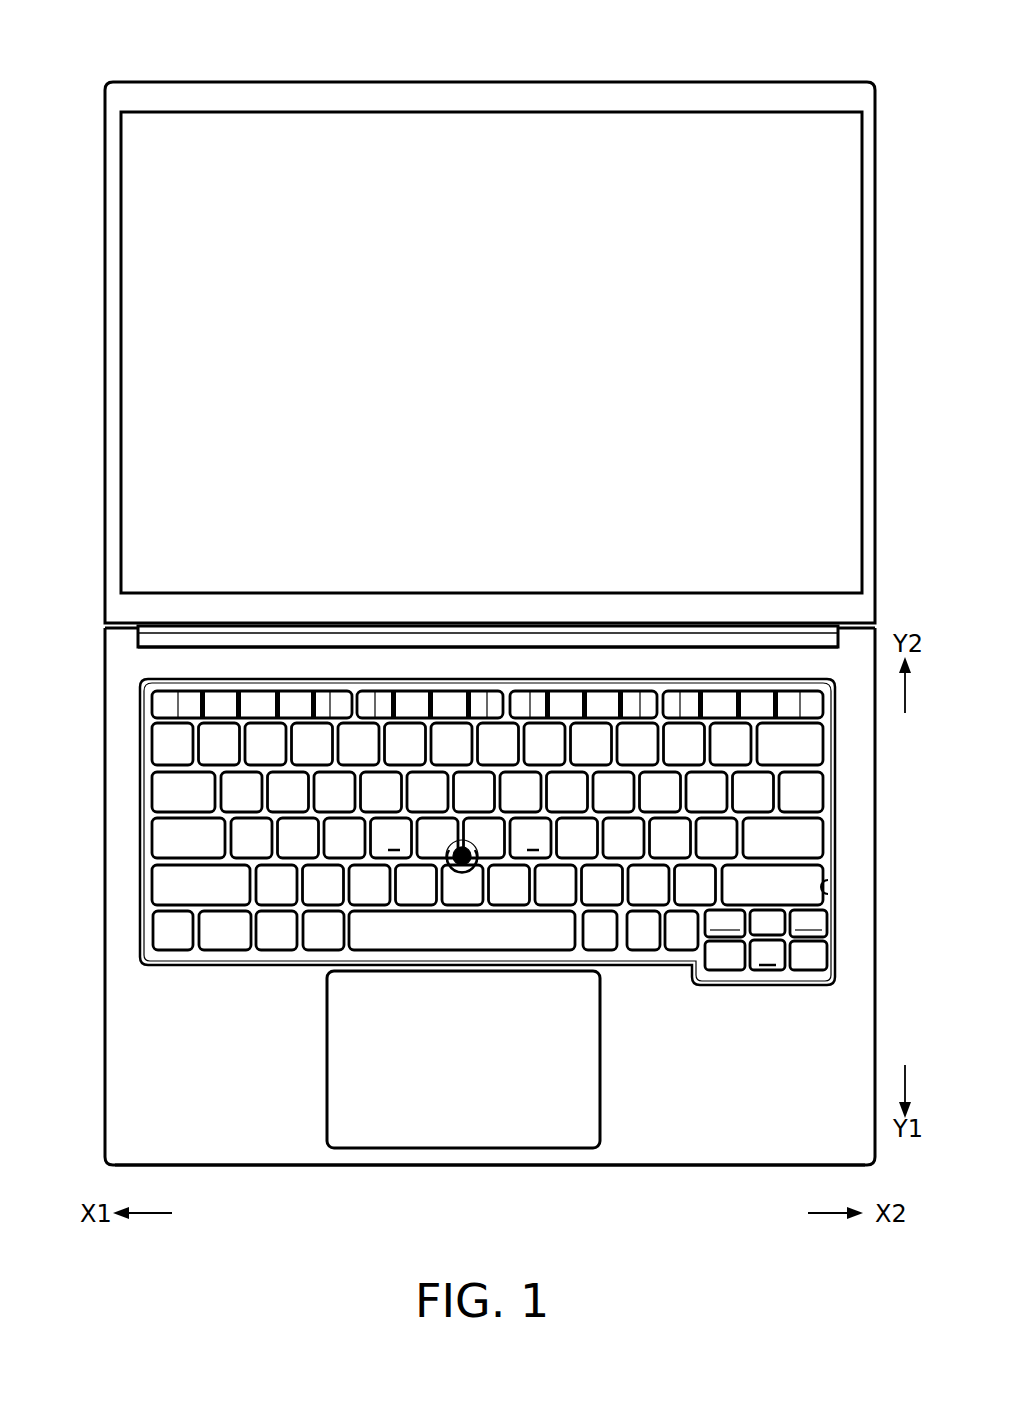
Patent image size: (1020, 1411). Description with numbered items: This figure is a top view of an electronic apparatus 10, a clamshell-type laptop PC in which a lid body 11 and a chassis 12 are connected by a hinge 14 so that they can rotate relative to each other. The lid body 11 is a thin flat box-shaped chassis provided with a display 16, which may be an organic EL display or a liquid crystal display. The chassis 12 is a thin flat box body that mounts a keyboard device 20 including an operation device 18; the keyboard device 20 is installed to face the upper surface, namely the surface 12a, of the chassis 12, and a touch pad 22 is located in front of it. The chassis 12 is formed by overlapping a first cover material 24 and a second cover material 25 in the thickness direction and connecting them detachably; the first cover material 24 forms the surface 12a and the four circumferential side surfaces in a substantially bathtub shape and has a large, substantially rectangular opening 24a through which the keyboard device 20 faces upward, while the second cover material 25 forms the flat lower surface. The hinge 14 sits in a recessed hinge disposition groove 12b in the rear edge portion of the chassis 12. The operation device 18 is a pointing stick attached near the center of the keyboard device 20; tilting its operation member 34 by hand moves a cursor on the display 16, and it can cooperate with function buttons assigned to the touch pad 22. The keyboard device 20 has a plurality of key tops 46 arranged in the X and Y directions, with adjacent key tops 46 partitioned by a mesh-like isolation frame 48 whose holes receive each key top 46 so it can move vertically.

The electronic apparatus 10 is at (104, 22).
The lid body 11 is at (212, 78).
The chassis 12 is at (57, 1058).
The surface 12a is at (290, 1168).
The hinge disposition groove 12b is at (620, 647).
The hinge 14 is at (308, 620).
The display 16 is at (660, 138).
The operation device 18 is at (462, 856).
The keyboard device 20 is at (665, 965).
The touch pad 22 is at (455, 1123).
The first cover material 24 is at (137, 1077).
The opening 24a is at (828, 887).
The second cover material 25 is at (135, 1112).
The operation member 34 is at (460, 846).
The key tops 46 is at (270, 885).
The isolation frame 48 is at (255, 908).